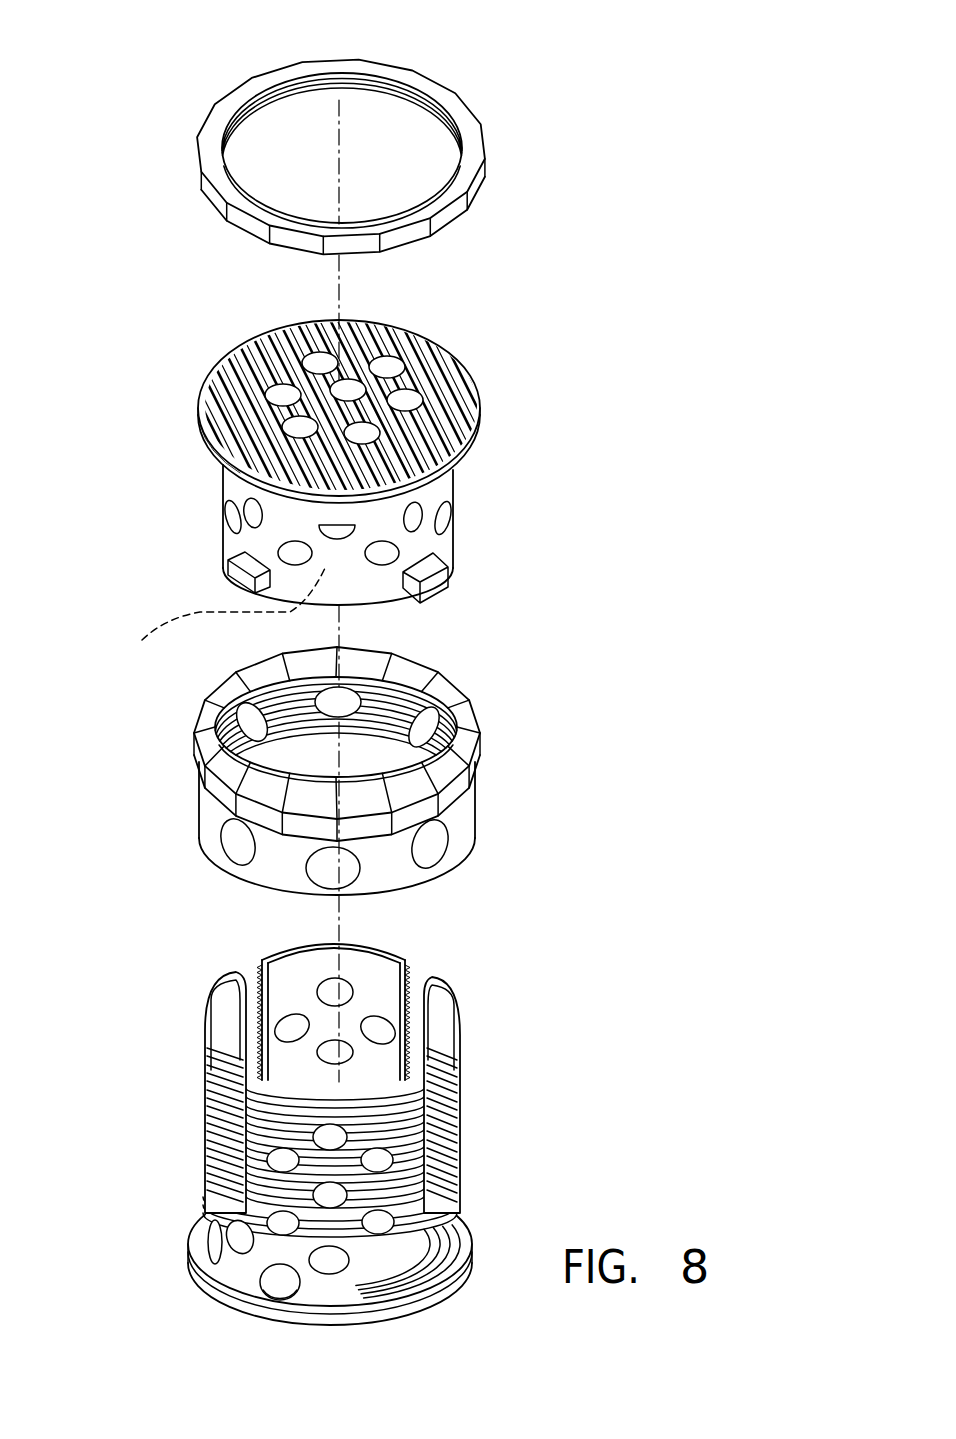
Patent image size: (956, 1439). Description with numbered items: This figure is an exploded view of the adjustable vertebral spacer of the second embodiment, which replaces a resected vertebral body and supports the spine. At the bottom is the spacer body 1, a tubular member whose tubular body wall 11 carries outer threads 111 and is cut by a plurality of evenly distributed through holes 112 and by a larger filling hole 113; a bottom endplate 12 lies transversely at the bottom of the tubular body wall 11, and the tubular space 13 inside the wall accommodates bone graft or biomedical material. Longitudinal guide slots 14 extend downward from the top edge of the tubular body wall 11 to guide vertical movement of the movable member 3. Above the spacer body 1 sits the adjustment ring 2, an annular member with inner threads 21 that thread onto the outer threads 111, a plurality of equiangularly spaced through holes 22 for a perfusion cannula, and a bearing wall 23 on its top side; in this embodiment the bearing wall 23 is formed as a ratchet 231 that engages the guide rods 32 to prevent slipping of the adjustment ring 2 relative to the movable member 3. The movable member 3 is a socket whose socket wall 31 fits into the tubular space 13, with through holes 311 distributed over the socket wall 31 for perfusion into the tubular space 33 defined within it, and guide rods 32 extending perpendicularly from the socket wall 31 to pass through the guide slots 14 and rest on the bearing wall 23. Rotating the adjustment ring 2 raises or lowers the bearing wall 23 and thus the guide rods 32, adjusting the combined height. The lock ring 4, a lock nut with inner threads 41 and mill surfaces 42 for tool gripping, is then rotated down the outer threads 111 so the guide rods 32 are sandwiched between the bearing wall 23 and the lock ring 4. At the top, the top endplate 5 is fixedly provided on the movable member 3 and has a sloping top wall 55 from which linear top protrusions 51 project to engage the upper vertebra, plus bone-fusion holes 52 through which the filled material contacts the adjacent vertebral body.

The spacer body 1 is at (341, 1128).
The tubular body wall 11 is at (410, 985).
The outer threads 111 is at (457, 1152).
The through holes 112 is at (213, 1237).
The filling hole 113 is at (440, 1231).
The bottom endplate 12 is at (440, 1297).
The tubular space 13 is at (294, 994).
The longitudinal guide slots 14 is at (422, 1009).
The adjustment ring 2 is at (404, 747).
The inner threads 21 is at (402, 714).
The through holes 22 is at (440, 850).
The bearing wall 23 is at (468, 722).
The ratchet 231 is at (463, 753).
The movable member 3 is at (340, 565).
The socket wall 31 is at (255, 538).
The through holes 311 is at (240, 570).
The guide rods 32 is at (463, 587).
The tubular space 33 is at (219, 617).
The lock ring 4 is at (463, 120).
The inner threads 41 is at (403, 93).
The mill surfaces 42 is at (450, 213).
The top endplate 5 is at (348, 403).
The top protrusions 51 is at (262, 337).
The bone-fusion hole 52 is at (366, 373).
The sloping top wall 55 is at (213, 437).